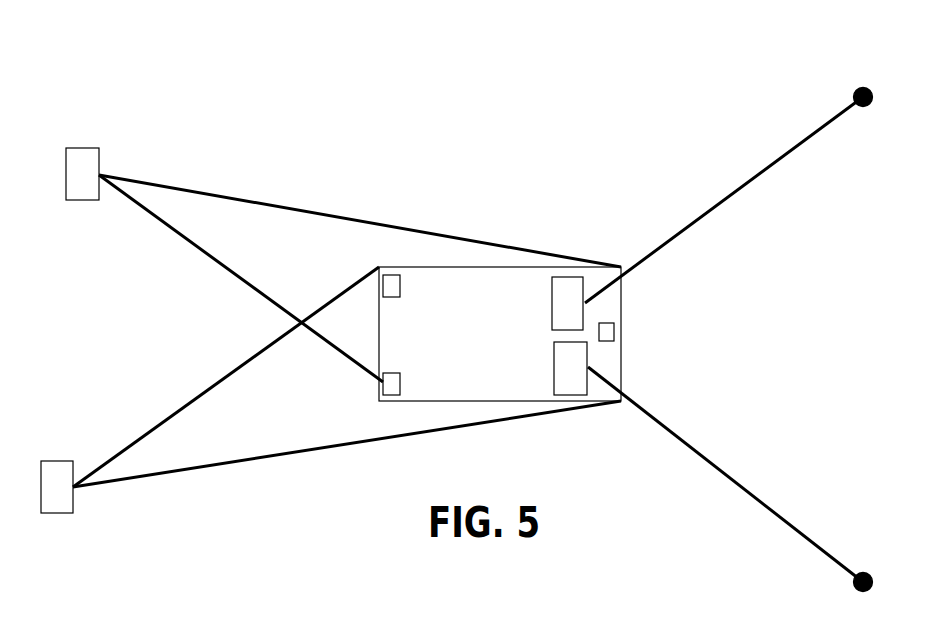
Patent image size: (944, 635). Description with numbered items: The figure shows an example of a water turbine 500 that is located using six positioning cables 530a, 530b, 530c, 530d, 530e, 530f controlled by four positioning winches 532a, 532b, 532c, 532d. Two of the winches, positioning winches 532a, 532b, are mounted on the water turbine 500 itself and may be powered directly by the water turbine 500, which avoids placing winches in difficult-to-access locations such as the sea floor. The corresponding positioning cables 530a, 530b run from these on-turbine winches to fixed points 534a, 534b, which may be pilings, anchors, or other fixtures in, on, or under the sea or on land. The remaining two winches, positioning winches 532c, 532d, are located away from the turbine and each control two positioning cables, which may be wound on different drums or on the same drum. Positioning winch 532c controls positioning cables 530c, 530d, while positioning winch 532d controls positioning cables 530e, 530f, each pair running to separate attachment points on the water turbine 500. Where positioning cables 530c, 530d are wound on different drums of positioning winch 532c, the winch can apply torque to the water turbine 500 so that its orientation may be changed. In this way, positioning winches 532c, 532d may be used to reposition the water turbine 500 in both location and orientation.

The water turbine 500 is at (621, 335).
The positioning winch 532a is at (556, 300).
The positioning winch 532b is at (557, 375).
The positioning winch 532c is at (60, 461).
The positioning winch 532d is at (85, 148).
The positioning cable 530a is at (765, 170).
The positioning cable 530b is at (783, 518).
The positioning cable 530c is at (293, 450).
The positioning cable 530d is at (158, 420).
The positioning cable 530e is at (265, 293).
The positioning cable 530f is at (278, 208).
The fixed point 534a is at (858, 88).
The fixed point 534b is at (865, 570).